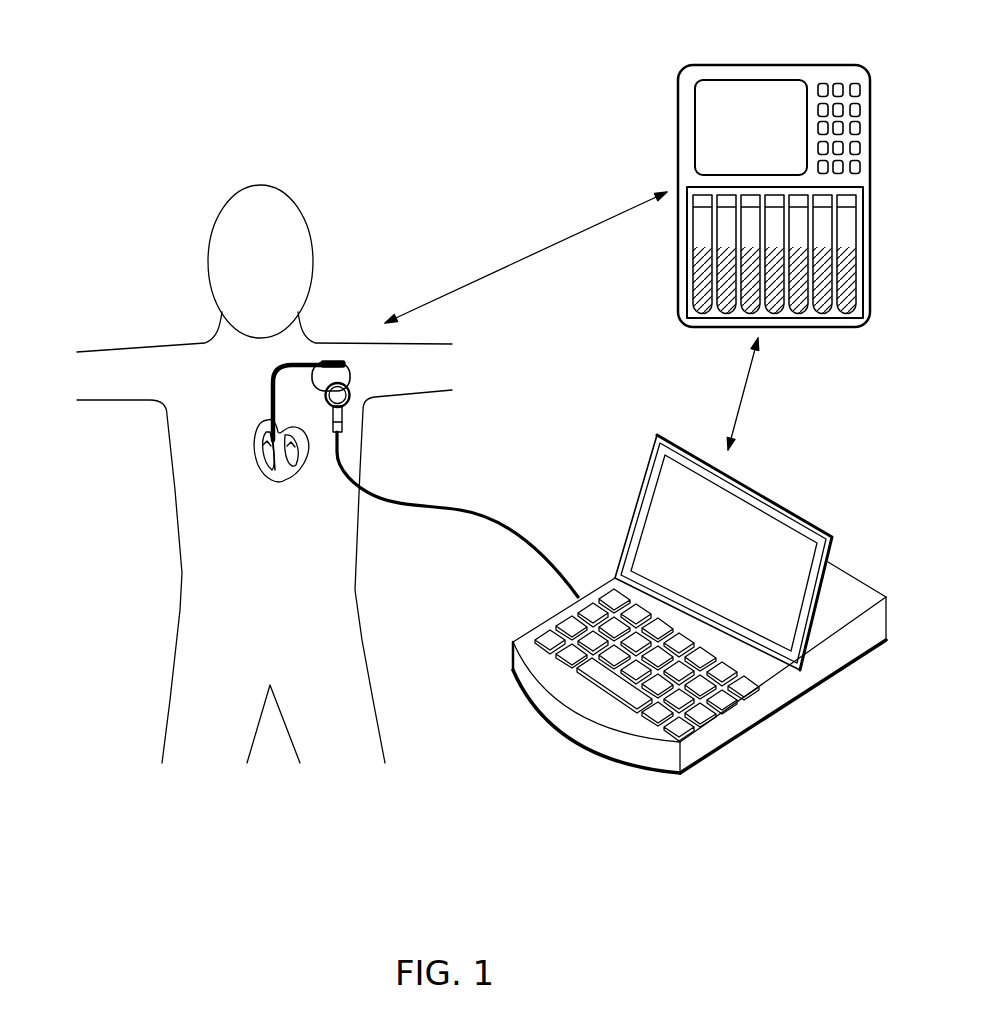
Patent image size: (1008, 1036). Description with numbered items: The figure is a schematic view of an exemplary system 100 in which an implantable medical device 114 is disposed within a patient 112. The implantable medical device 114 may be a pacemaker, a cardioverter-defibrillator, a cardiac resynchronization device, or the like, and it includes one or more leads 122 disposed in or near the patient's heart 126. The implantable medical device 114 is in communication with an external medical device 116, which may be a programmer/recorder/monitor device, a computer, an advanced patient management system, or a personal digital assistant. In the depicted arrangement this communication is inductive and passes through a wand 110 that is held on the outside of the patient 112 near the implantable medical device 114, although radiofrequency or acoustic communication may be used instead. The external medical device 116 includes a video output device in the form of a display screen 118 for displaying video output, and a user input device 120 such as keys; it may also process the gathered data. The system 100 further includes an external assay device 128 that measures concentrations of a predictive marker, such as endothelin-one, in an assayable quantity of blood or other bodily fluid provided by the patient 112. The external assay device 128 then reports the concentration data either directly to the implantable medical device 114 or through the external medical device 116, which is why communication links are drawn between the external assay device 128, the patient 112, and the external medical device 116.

The system 100 is at (498, 838).
The wand 110 is at (418, 414).
The patient 112 is at (143, 373).
The implantable medical device 114 is at (490, 347).
The external medical device 116 is at (699, 619).
The display screen 118 is at (727, 525).
The user input device 120 is at (835, 738).
The leads 122 is at (267, 370).
The heart 126 is at (310, 518).
The external assay device 128 is at (686, 75).